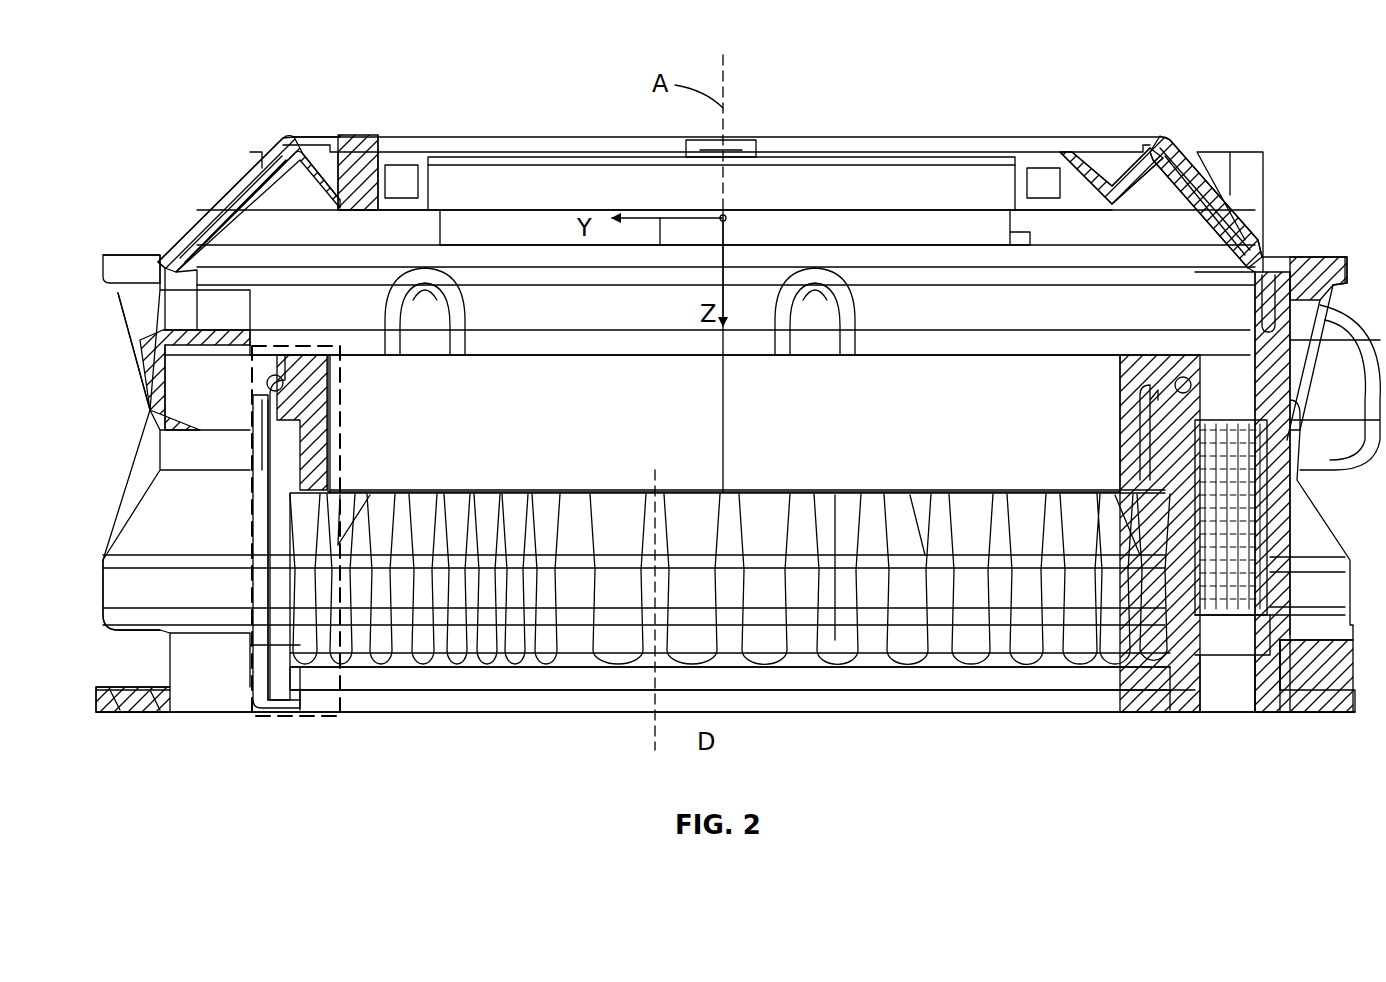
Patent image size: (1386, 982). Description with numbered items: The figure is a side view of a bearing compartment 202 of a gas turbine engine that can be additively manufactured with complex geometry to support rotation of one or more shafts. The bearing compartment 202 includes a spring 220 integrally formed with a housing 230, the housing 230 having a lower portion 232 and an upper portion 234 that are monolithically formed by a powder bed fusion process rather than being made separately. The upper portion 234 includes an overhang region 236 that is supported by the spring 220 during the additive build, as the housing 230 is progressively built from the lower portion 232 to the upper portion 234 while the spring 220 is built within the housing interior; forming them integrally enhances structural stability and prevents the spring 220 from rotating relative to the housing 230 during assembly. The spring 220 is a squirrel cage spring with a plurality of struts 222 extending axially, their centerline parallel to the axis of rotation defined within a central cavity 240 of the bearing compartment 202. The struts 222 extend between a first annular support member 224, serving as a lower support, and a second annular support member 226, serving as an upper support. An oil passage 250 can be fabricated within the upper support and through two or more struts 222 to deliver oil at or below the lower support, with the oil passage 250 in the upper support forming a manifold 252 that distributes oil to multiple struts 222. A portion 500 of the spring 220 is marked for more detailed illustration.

The bearing compartment 202 is at (245, 75).
The spring 220 is at (610, 632).
The struts 222 is at (258, 605).
The first annular support member 224 is at (445, 685).
The second annular support member 226 is at (1190, 435).
The housing 230 is at (150, 445).
The lower portion 232 is at (110, 628).
The upper portion 234 is at (120, 255).
The overhang region 236 is at (195, 395).
The central cavity 240 is at (885, 185).
The oil passage 250 is at (265, 553).
The manifold 252 is at (262, 380).
The portion 500 is at (265, 718).